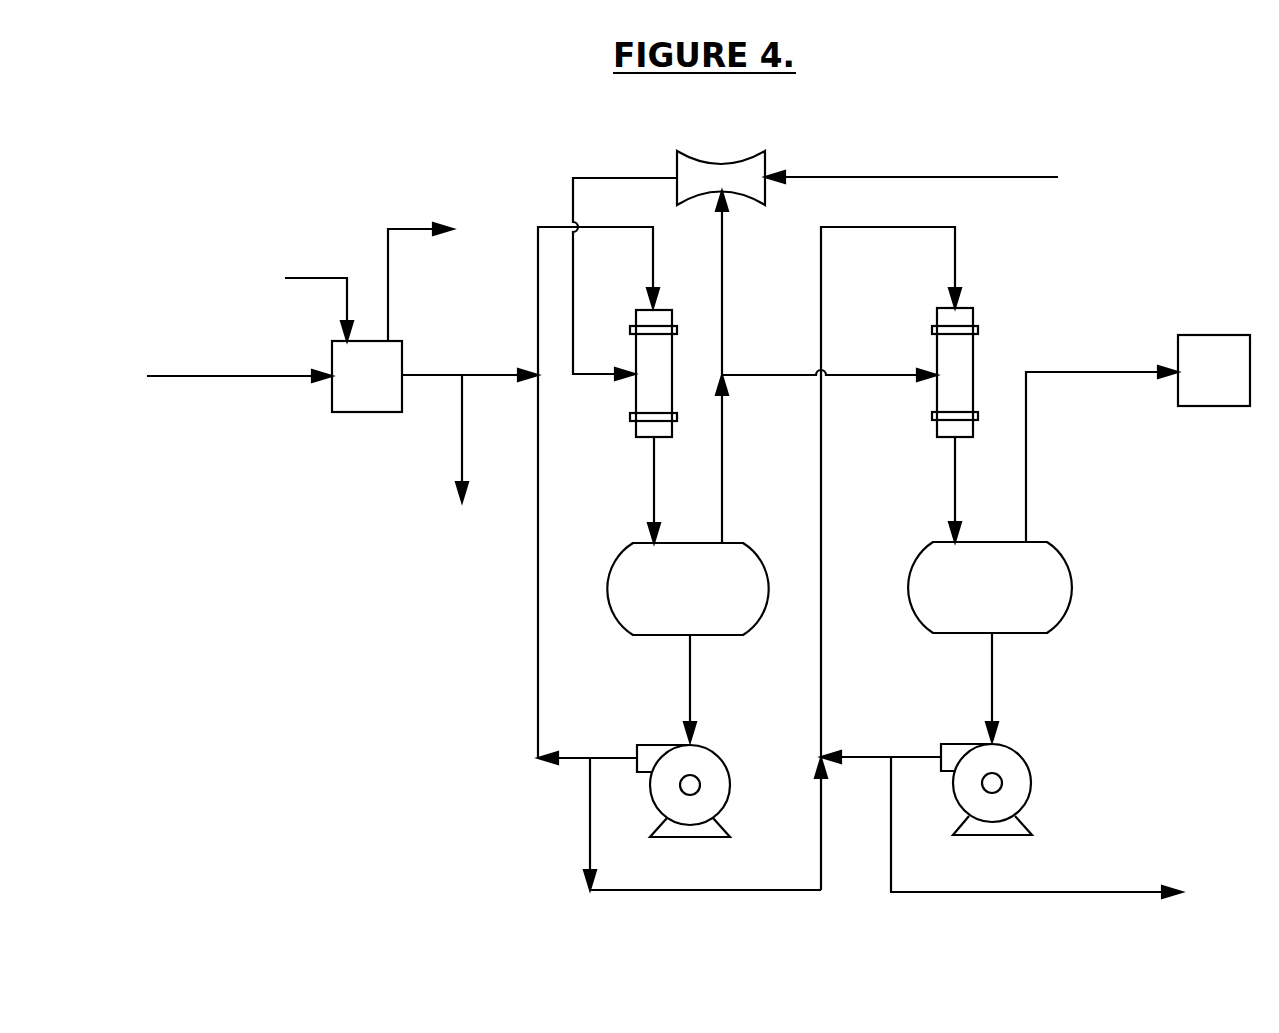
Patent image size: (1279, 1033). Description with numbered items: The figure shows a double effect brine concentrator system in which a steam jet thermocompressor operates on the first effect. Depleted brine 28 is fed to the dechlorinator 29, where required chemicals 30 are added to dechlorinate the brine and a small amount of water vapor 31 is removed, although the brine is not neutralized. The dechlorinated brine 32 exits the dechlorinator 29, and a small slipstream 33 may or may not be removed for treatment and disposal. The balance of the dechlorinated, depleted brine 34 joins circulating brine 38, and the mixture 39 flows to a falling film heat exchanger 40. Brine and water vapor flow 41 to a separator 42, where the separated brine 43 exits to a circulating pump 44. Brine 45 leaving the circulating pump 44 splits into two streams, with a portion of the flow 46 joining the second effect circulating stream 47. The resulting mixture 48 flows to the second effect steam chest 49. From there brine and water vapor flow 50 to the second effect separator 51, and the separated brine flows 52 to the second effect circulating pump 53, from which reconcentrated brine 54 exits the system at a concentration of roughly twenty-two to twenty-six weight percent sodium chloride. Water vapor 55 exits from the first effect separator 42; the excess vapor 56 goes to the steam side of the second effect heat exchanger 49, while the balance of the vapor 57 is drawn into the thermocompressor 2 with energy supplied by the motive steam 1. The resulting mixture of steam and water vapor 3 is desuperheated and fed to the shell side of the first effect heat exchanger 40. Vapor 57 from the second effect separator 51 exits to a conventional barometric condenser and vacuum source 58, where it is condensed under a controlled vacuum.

The motive steam 1 is at (911, 164).
The thermocompressor 2 is at (721, 165).
The mixture of steam and water vapor 3 is at (625, 263).
The depleted brine 28 is at (239, 362).
The dechlorinator 29 is at (367, 376).
The required chemicals 30 is at (319, 293).
The water vapor 31 is at (420, 267).
The dechlorinated brine 32 is at (432, 357).
The slipstream 33 is at (465, 456).
The dechlorinated depleted brine 34 is at (500, 360).
The circulating brine 38 is at (521, 566).
The mixture 39 is at (583, 301).
The falling film heat exchanger 40 is at (653, 373).
The brine and water vapor flow 41 is at (641, 490).
The separator 42 is at (687, 589).
The separated brine 43 is at (675, 688).
The circulating pump 44 is at (699, 791).
The brine exiting circulating pump 45 is at (587, 745).
The portion of the flow 46 is at (702, 824).
The second effect circulating stream 47 is at (881, 744).
The mixture 48 is at (873, 558).
The second effect steam chest 49 is at (955, 372).
The brine and water vapor flow 50 is at (940, 489).
The second effect separator 51 is at (990, 587).
The separated brine flow 52 is at (977, 687).
The second effect circulating pump 53 is at (1003, 789).
The reconcentrated brine 54 is at (1036, 827).
The water vapor 55 is at (708, 459).
The excess vapor 56 is at (829, 361).
The vapor 57 is at (933, 366).
The barometric condenser and vacuum source 58 is at (1214, 370).